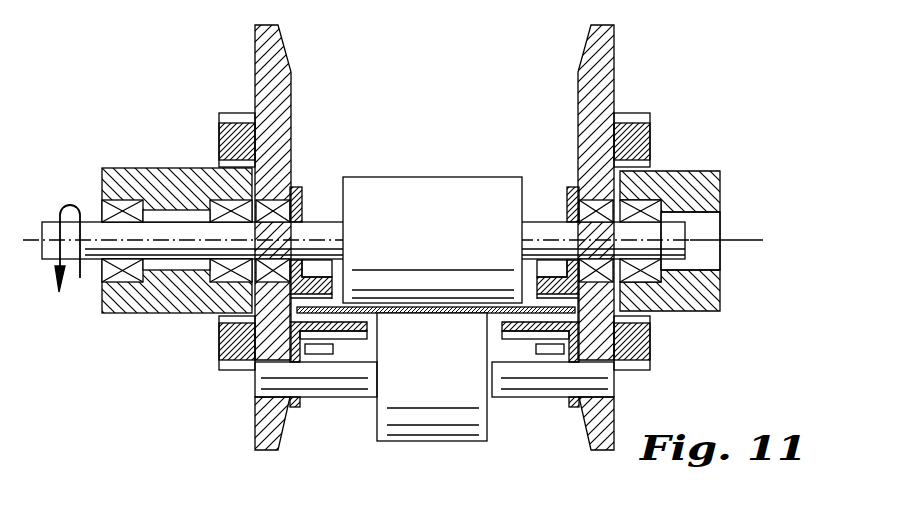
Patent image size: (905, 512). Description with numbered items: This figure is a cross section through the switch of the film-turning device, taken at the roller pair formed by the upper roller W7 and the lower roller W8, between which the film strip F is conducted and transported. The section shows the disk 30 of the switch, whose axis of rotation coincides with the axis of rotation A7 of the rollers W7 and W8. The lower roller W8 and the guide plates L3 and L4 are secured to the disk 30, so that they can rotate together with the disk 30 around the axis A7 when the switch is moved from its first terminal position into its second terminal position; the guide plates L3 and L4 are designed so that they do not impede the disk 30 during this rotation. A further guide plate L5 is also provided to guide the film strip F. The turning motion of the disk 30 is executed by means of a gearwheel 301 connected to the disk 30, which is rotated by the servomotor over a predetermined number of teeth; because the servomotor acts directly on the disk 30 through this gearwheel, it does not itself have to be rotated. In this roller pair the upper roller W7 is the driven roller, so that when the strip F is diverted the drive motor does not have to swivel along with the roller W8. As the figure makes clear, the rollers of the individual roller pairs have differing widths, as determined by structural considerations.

The disk 30 is at (262, 47).
The gearwheel 301 is at (240, 117).
The guide plate L4 is at (322, 283).
The roller W7 is at (472, 190).
The film strip F is at (428, 305).
The axis of rotation A7 is at (707, 240).
The guide plate L3 is at (350, 339).
The guide plate L5 is at (322, 354).
The roller W8 is at (437, 418).